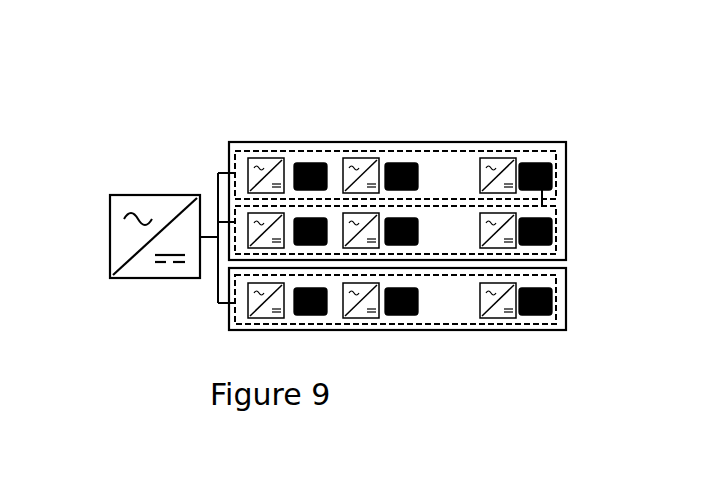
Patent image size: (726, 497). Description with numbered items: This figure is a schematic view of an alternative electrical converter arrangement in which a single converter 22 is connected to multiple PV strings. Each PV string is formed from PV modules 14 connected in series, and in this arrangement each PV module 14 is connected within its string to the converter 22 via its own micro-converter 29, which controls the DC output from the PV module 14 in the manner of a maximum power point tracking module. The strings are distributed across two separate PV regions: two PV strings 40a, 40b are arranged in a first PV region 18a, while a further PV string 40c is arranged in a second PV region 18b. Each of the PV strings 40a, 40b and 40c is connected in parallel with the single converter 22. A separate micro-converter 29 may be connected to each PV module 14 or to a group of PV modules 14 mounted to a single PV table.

The converter 22 is at (115, 195).
The micro-converter 29 is at (268, 158).
The PV module 14 is at (312, 165).
The first PV region 18a is at (453, 140).
The second PV region 18b is at (468, 358).
The PV string 40a is at (416, 113).
The PV string 40b is at (469, 325).
The PV string 40c is at (552, 162).